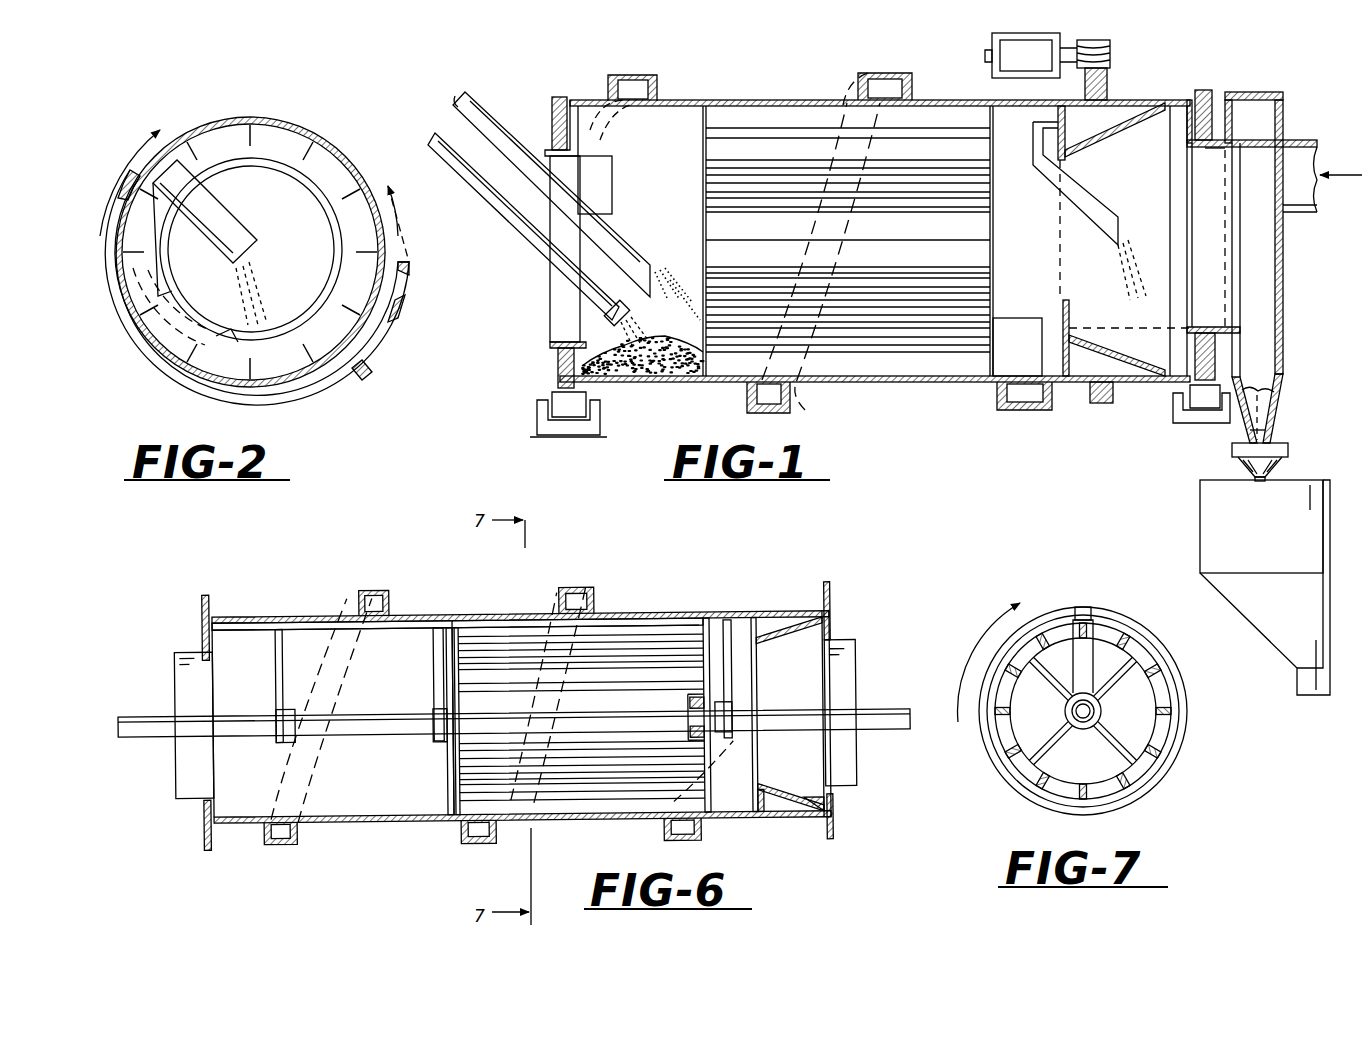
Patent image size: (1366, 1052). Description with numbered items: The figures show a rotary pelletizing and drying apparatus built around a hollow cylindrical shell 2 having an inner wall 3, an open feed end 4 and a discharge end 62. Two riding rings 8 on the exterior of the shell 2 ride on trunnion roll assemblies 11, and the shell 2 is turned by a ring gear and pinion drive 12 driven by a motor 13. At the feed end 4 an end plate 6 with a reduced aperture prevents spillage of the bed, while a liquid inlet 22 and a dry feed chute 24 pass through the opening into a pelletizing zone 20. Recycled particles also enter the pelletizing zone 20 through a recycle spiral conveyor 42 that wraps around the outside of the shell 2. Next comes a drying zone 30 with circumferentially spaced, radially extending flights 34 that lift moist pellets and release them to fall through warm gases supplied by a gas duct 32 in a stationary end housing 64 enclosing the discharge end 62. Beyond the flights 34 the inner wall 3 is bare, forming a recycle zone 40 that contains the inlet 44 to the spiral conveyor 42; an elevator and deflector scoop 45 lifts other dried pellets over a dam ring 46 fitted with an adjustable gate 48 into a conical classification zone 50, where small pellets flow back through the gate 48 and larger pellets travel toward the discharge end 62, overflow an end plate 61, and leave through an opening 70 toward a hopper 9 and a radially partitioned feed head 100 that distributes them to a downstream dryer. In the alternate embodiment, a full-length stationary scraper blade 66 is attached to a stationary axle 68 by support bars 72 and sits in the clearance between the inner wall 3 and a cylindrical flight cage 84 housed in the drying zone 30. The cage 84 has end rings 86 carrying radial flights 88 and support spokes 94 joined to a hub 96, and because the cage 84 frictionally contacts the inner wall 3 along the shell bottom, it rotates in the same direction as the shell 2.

In FIG. 2, the hollow cylindrical shell 2 is at (252, 115).
In FIG. 1, the hollow cylindrical shell 2 is at (662, 95).
In FIG. 6, the hollow cylindrical shell 2 is at (392, 608).
In FIG. 7, the hollow cylindrical shell 2 is at (1187, 668).
In FIG. 2, the inner wall 3 is at (308, 145).
In FIG. 1, the inner wall 3 is at (775, 112).
In FIG. 6, the inner wall 3 is at (312, 614).
In FIG. 7, the inner wall 3 is at (1170, 648).
In FIG. 1, the feed end 4 is at (550, 300).
In FIG. 6, the feed end 4 is at (175, 676).
In FIG. 1, the end plate 6 is at (612, 316).
In FIG. 6, the end plate 6 is at (215, 800).
In FIG. 1, the riding rings 8 is at (560, 97).
In FIG. 6, the riding rings 8 is at (212, 592).
In FIG. 1, the collection hopper 9 is at (1333, 535).
In FIG. 1, the trunnion roll assemblies 11 is at (537, 422).
In FIG. 1, the ring gear and pinion drive 12 is at (1110, 48).
In FIG. 1, the motor 13 is at (1036, 36).
In FIG. 1, the pelletizing zone 20 is at (660, 196).
In FIG. 6, the pelletizing zone 20 is at (392, 774).
In FIG. 1, the liquid inlet 22 is at (490, 182).
In FIG. 1, the dry feed chute 24 is at (492, 98).
In FIG. 1, the drying zone 30 is at (925, 232).
In FIG. 6, the drying zone 30 is at (624, 750).
In FIG. 1, the gas duct 32 is at (1296, 132).
In FIG. 2, the flights 34 is at (343, 190).
In FIG. 1, the flights 34 is at (905, 340).
In FIG. 1, the recycle zone 40 is at (1035, 226).
In FIG. 6, the recycle zone 40 is at (762, 652).
In FIG. 2, the recycle spiral conveyor 42 is at (338, 380).
In FIG. 1, the recycle spiral conveyor 42 is at (640, 75).
In FIG. 6, the recycle spiral conveyor 42 is at (376, 589).
In FIG. 2, the inlet 44 is at (190, 399).
In FIG. 1, the inlet 44 is at (1020, 410).
In FIG. 6, the inlet 44 is at (665, 840).
In FIG. 2, the elevator and deflector scoop 45 is at (228, 225).
In FIG. 1, the elevator and deflector scoop 45 is at (1085, 222).
In FIG. 2, the dam ring 46 is at (340, 258).
In FIG. 1, the dam ring 46 is at (1100, 405).
In FIG. 6, the dam ring 46 is at (762, 814).
In FIG. 2, the adjustable gate 48 is at (140, 300).
In FIG. 1, the adjustable gate 48 is at (1068, 305).
In FIG. 2, the classification zone 50 is at (305, 272).
In FIG. 1, the classification zone 50 is at (1142, 180).
In FIG. 6, the classification zone 50 is at (802, 757).
In FIG. 1, the end plate 61 is at (1180, 360).
In FIG. 6, the end plate 61 is at (816, 815).
In FIG. 1, the discharge end 62 is at (1250, 300).
In FIG. 6, the discharge end 62 is at (858, 664).
In FIG. 1, the end housing 64 is at (1282, 345).
In FIG. 6, the stationary scraper blade 66 is at (258, 620).
In FIG. 7, the stationary scraper blade 66 is at (1083, 607).
In FIG. 6, the stationary axle 68 is at (890, 733).
In FIG. 1, the opening 70 is at (1240, 440).
In FIG. 6, the support bars 72 is at (283, 680).
In FIG. 7, the support bars 72 is at (1093, 612).
In FIG. 6, the cylindrical flight cage 84 is at (444, 790).
In FIG. 7, the cylindrical flight cage 84 is at (1138, 620).
In FIG. 6, the end rings 86 is at (455, 630).
In FIG. 7, the end rings 86 is at (1003, 745).
In FIG. 6, the radial flights 88 is at (638, 640).
In FIG. 7, the radial flights 88 is at (1040, 795).
In FIG. 6, the support spokes 94 is at (460, 632).
In FIG. 7, the support spokes 94 is at (1128, 752).
In FIG. 6, the hub 96 is at (447, 760).
In FIG. 7, the hub 96 is at (1083, 729).
In FIG. 1, the radially partitioned feed head 100 is at (1288, 448).